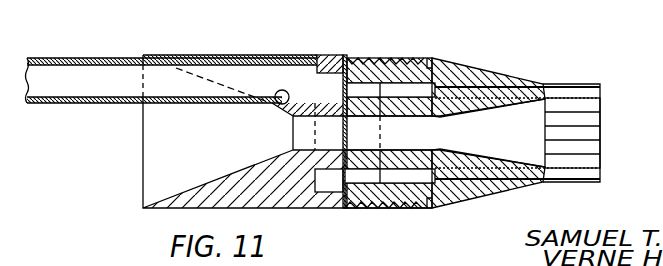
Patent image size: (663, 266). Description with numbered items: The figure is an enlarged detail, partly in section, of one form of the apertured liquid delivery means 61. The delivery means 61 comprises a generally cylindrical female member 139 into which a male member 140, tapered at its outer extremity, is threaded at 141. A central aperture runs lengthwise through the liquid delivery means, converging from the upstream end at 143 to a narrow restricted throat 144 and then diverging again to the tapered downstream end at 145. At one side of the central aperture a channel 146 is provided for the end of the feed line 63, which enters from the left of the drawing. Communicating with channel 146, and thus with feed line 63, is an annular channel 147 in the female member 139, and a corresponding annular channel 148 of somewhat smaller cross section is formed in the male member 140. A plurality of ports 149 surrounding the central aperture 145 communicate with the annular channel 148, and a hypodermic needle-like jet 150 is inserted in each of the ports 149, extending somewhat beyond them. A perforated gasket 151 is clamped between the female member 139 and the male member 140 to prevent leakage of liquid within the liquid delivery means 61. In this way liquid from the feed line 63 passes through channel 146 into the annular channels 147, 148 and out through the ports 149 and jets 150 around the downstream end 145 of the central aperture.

The feed line 63 is at (74, 105).
The female member 139 is at (271, 56).
The apertured liquid delivery means 61 is at (334, 53).
The upstream end 143 is at (190, 140).
The channel 146 is at (281, 104).
The annular channel 147 is at (327, 193).
The perforated gasket 151 is at (344, 209).
The threads 141 is at (385, 57).
The ports 149 is at (420, 92).
The annular channel 148 is at (369, 184).
The throat 144 is at (428, 138).
The tapered downstream end 145 is at (537, 138).
The male member 140 is at (490, 73).
The heater element 150 is at (578, 130).